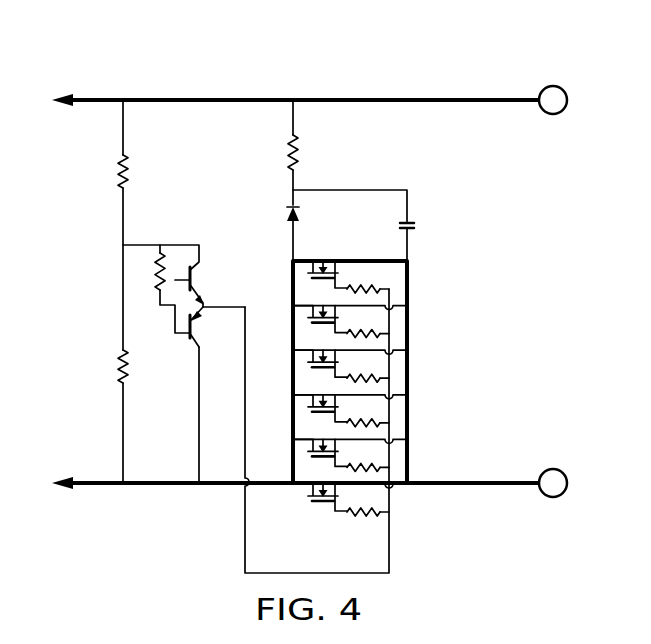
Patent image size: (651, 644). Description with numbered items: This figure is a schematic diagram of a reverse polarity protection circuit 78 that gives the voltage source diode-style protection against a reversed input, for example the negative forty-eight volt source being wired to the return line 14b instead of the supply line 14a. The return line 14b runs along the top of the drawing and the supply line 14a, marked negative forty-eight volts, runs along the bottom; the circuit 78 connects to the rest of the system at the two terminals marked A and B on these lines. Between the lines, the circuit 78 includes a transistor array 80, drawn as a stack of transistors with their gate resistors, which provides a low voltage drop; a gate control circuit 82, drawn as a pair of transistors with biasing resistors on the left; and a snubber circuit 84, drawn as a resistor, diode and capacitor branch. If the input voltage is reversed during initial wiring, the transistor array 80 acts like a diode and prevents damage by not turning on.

The reverse polarity protection circuit 78 is at (242, 64).
The supply line 14a is at (163, 484).
The return line 14b is at (423, 98).
The gate control circuit 82 is at (215, 226).
The snubber circuit 84 is at (476, 190).
The transistor array 80 is at (440, 312).